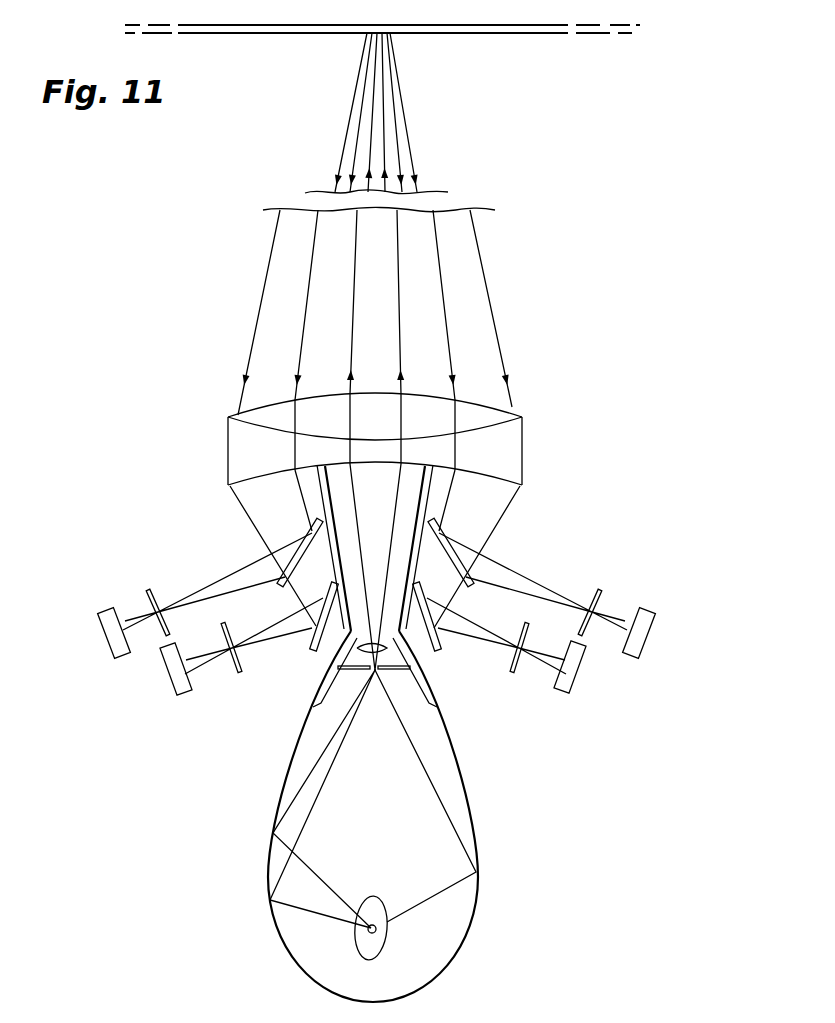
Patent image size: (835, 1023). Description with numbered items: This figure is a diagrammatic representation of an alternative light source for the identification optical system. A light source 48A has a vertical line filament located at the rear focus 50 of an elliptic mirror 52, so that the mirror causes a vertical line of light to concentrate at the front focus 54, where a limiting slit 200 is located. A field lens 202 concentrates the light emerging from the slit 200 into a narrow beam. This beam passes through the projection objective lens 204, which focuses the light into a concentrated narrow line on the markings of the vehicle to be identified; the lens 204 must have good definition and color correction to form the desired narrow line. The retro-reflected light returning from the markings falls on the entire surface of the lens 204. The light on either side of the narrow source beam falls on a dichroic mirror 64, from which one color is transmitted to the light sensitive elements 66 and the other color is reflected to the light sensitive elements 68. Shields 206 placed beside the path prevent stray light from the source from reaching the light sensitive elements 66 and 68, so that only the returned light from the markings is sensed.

The projection objective lens 204 is at (517, 437).
The dichroic mirror 64 is at (308, 553).
The light sensitive elements 66 is at (172, 668).
The light sensitive elements 68 is at (106, 633).
The field lens 202 is at (388, 649).
The limiting slit 200 is at (383, 675).
The front focus 54 is at (375, 674).
The shields 206 is at (316, 690).
The elliptic mirror 52 is at (468, 806).
The light source 48A is at (376, 898).
The rear focus 50 is at (375, 933).